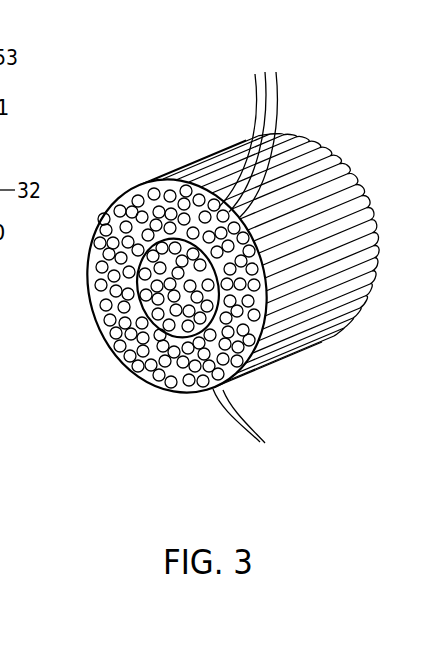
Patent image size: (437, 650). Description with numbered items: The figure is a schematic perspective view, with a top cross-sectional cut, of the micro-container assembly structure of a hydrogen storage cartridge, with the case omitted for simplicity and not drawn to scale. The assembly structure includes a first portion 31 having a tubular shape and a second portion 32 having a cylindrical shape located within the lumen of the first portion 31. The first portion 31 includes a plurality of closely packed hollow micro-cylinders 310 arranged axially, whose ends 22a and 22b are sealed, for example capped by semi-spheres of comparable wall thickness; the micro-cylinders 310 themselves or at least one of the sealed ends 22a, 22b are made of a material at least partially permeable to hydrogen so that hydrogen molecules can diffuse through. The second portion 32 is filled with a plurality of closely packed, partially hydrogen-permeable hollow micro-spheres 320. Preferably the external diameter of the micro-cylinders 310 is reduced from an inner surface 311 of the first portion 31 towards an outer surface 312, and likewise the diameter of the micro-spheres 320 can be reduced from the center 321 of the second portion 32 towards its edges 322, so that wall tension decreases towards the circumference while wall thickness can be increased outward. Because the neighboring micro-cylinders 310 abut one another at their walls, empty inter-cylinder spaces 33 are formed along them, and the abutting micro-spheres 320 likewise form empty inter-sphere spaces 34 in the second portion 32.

The end of micro-cylinder 22a is at (138, 392).
The end of micro-cylinder 22b is at (333, 152).
The first portion 31 is at (107, 362).
The second portion 32 is at (200, 392).
The inter-cylinder spaces 33 is at (108, 210).
The inter-sphere spaces 34 is at (187, 392).
The hollow micro-cylinders 310 is at (238, 380).
The inner surface of the first portion 311 is at (265, 334).
The outer surface of the first portion 312 is at (240, 362).
The hollow micro-spheres 320 is at (262, 72).
The center of the second portion 321 is at (163, 240).
The edges of the second portion 322 is at (133, 192).